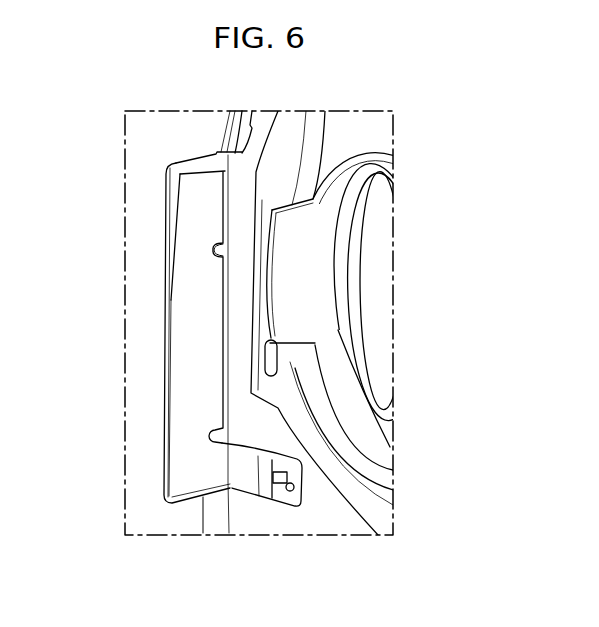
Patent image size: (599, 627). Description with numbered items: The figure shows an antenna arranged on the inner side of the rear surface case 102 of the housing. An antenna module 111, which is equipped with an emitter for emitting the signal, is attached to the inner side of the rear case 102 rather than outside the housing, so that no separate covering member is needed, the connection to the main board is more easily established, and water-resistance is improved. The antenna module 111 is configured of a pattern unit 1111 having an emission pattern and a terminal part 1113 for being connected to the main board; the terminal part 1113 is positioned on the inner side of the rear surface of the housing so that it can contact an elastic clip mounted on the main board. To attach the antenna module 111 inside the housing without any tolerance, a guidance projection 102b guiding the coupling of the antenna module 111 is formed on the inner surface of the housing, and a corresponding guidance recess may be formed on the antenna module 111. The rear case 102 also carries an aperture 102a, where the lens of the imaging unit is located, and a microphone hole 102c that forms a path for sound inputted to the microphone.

The antenna module 111 is at (152, 172).
The pattern unit 1111 is at (190, 462).
The terminal part 1113 is at (280, 494).
The rear surface case 102 is at (348, 128).
The aperture 102a is at (383, 254).
The guidance projection 102b is at (212, 250).
The microphone hole 102c is at (278, 355).